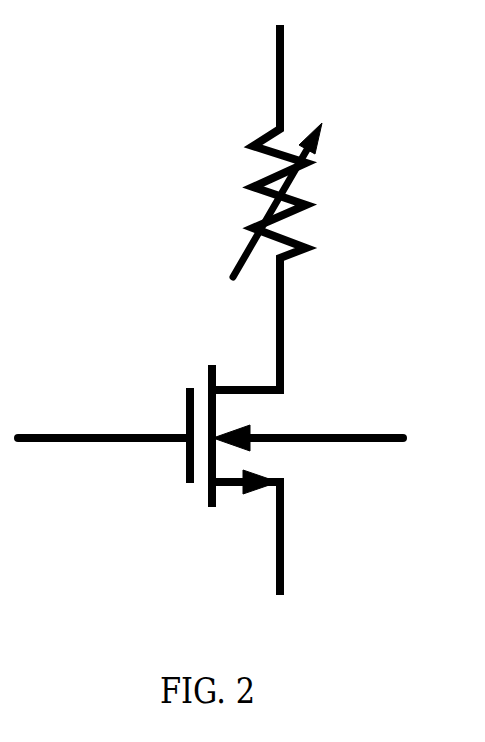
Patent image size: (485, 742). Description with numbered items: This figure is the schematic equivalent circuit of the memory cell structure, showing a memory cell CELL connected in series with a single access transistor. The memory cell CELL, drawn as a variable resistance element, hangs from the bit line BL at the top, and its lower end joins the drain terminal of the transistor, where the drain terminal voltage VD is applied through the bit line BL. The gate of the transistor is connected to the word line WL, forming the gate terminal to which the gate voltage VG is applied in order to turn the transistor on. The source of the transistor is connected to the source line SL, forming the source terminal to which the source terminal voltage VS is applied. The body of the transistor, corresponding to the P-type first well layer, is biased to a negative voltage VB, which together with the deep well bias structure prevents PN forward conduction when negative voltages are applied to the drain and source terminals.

The bit line BL is at (234, 77).
The memory cell CELL is at (192, 200).
The word line WL is at (98, 427).
The source line SL is at (229, 560).
The gate voltage VG is at (148, 414).
The drain terminal voltage VD is at (277, 324).
The negative voltage VB is at (308, 422).
The source terminal voltage VS is at (276, 519).